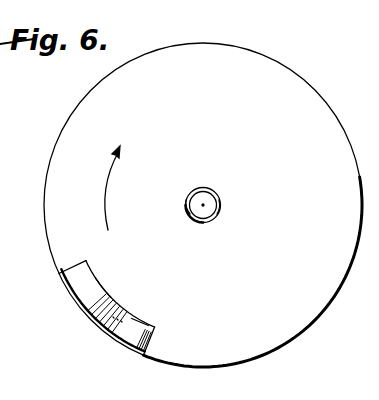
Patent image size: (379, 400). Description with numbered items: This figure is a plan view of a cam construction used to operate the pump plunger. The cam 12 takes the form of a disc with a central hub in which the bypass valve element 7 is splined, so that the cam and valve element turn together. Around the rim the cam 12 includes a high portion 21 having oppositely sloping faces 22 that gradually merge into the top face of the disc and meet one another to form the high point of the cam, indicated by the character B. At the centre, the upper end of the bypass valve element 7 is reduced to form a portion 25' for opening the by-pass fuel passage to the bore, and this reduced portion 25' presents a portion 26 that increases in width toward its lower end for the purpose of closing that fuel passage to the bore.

The cam 12 is at (203, 205).
The bypass valve element 7 is at (205, 200).
The portion increasing in width 26 is at (190, 207).
The reduced portion 25' is at (237, 210).
The high point of the cam B is at (101, 309).
The high portion 21 is at (102, 286).
The oppositely sloping faces 22 is at (140, 322).